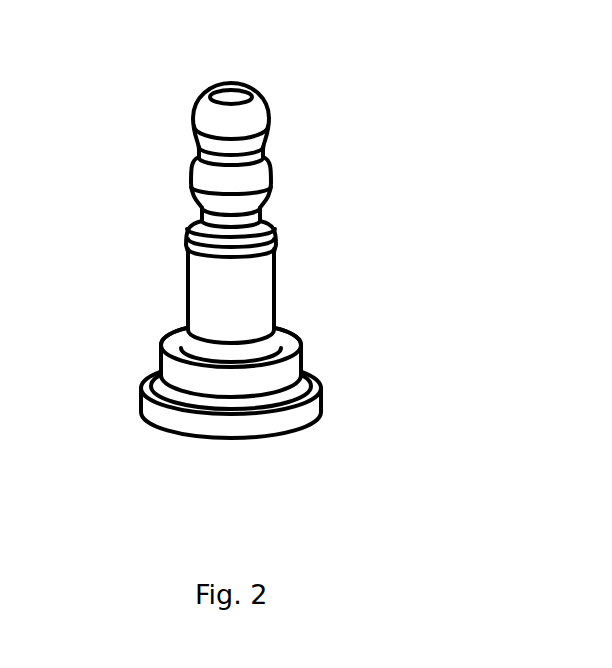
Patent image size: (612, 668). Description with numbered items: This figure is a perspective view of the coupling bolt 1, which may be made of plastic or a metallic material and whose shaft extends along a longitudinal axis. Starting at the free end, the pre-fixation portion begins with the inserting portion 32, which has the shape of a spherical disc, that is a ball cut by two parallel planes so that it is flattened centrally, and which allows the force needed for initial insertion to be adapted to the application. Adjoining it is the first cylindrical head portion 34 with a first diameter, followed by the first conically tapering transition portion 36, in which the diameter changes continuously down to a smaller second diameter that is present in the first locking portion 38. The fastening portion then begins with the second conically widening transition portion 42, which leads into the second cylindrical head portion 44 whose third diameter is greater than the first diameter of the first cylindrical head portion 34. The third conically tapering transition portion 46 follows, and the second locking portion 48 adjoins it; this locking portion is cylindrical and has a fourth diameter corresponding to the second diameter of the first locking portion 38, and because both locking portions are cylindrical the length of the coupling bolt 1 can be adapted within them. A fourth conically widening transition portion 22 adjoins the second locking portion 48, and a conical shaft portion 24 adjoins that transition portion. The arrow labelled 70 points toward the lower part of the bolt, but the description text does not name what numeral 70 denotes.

The coupling bolt 1 is at (422, 48).
The base assembly 70 is at (331, 362).
The shaft portion 24 is at (275, 282).
The fourth conically widening transition portion 22 is at (190, 241).
The inserting portion 32 is at (266, 98).
The first cylindrical head portion 34 is at (271, 133).
The first conically tapering transition portion 36 is at (197, 150).
The first locking portion 38 is at (265, 158).
The second conically widening transition portion 42 is at (191, 178).
The second cylindrical head portion 44 is at (272, 187).
The third conically tapering transition portion 46 is at (200, 212).
The second locking portion 48 is at (271, 220).